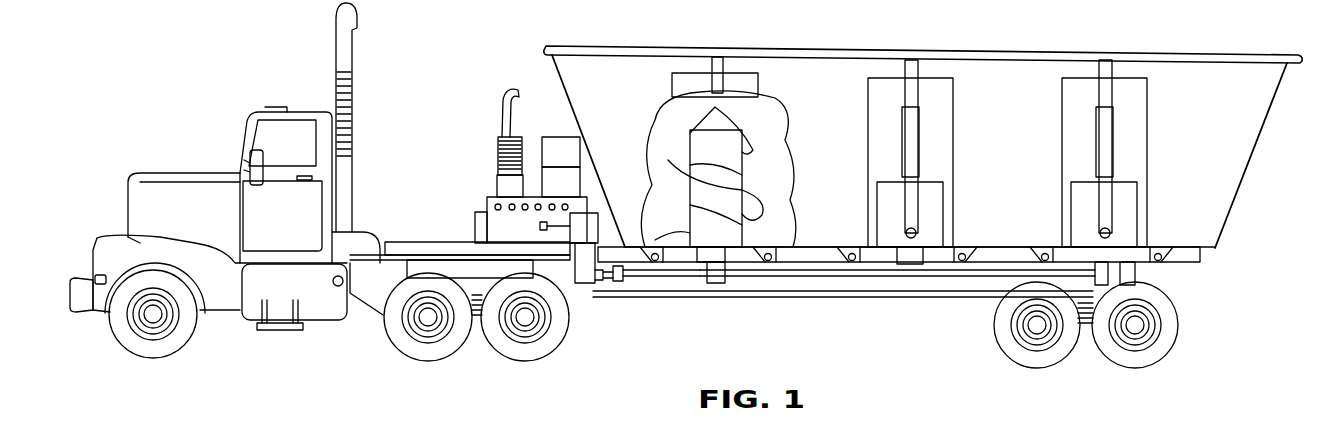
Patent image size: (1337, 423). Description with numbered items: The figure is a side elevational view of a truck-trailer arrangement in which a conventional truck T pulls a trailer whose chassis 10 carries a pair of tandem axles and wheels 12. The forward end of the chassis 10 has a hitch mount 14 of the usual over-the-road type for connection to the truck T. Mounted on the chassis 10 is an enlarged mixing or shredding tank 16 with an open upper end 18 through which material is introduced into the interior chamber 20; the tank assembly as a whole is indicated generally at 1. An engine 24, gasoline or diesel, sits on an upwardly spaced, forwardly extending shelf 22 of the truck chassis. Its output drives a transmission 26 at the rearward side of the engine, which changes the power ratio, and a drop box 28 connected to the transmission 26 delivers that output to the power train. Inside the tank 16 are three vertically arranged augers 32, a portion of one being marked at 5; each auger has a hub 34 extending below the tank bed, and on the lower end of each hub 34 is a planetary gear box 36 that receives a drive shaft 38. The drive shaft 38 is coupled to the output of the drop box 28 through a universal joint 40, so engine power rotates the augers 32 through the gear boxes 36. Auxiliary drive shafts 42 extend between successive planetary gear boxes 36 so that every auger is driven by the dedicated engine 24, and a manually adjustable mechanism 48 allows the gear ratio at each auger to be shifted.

The truck T is at (224, 158).
The hopper assembly 1 is at (1236, 210).
The auger 5 is at (745, 167).
The chassis 10 is at (1197, 260).
The wheels 12 is at (1181, 328).
The hitch mount 14 is at (467, 255).
The mixing or shredding tank 16 is at (1257, 152).
The open upper end 18 is at (1188, 52).
The interior chamber 20 is at (673, 113).
The shelf 22 is at (407, 242).
The engine 24 is at (485, 192).
The transmission 26 is at (598, 215).
The drop box 28 is at (585, 283).
The auger 32 is at (744, 123).
The hub 34 is at (913, 265).
The planetary gear box 36 is at (718, 284).
The drive shaft 38 is at (661, 279).
The universal joint 40 is at (619, 283).
The auxiliary drive shaft 42 is at (853, 284).
The manually adjustable mechanism 48 is at (539, 226).